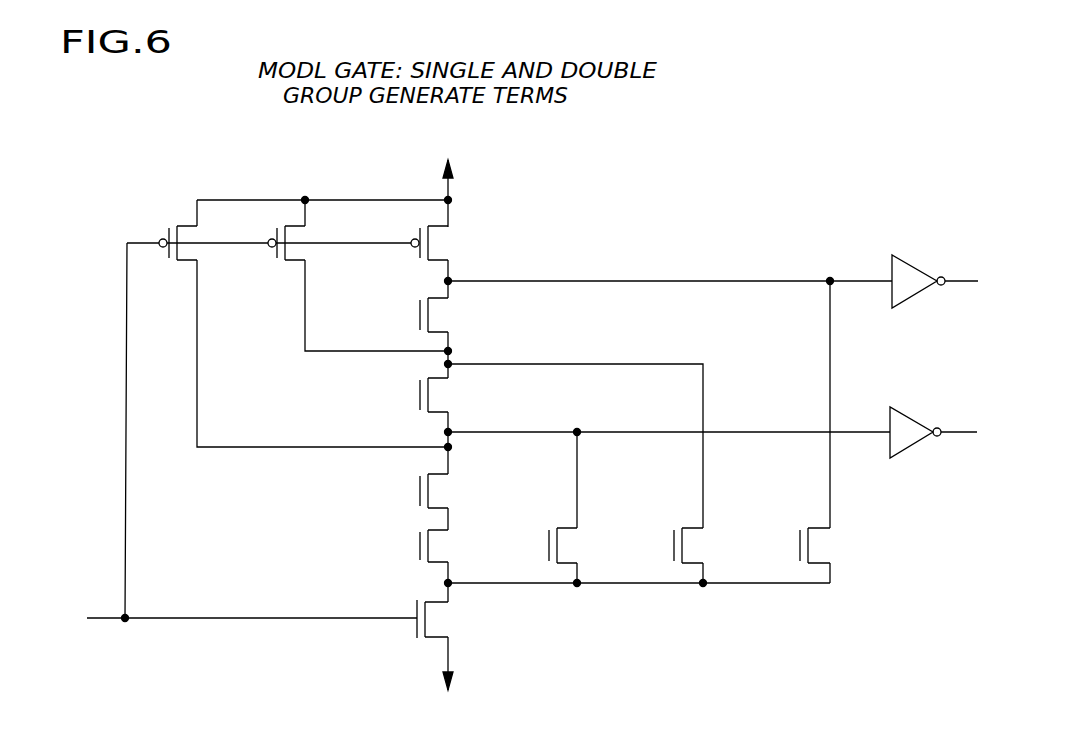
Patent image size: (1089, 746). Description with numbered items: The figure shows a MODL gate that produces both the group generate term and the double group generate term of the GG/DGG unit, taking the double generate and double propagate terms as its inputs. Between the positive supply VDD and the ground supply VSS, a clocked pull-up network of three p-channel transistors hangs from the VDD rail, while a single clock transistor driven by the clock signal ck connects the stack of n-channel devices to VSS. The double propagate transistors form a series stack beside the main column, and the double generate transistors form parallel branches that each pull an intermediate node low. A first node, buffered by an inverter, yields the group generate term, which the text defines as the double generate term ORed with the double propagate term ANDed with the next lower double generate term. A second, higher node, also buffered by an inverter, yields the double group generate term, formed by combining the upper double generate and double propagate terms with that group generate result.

The positive supply voltage VDD is at (460, 172).
The ground supply voltage VSS is at (441, 681).
The clock signal input ck is at (250, 440).